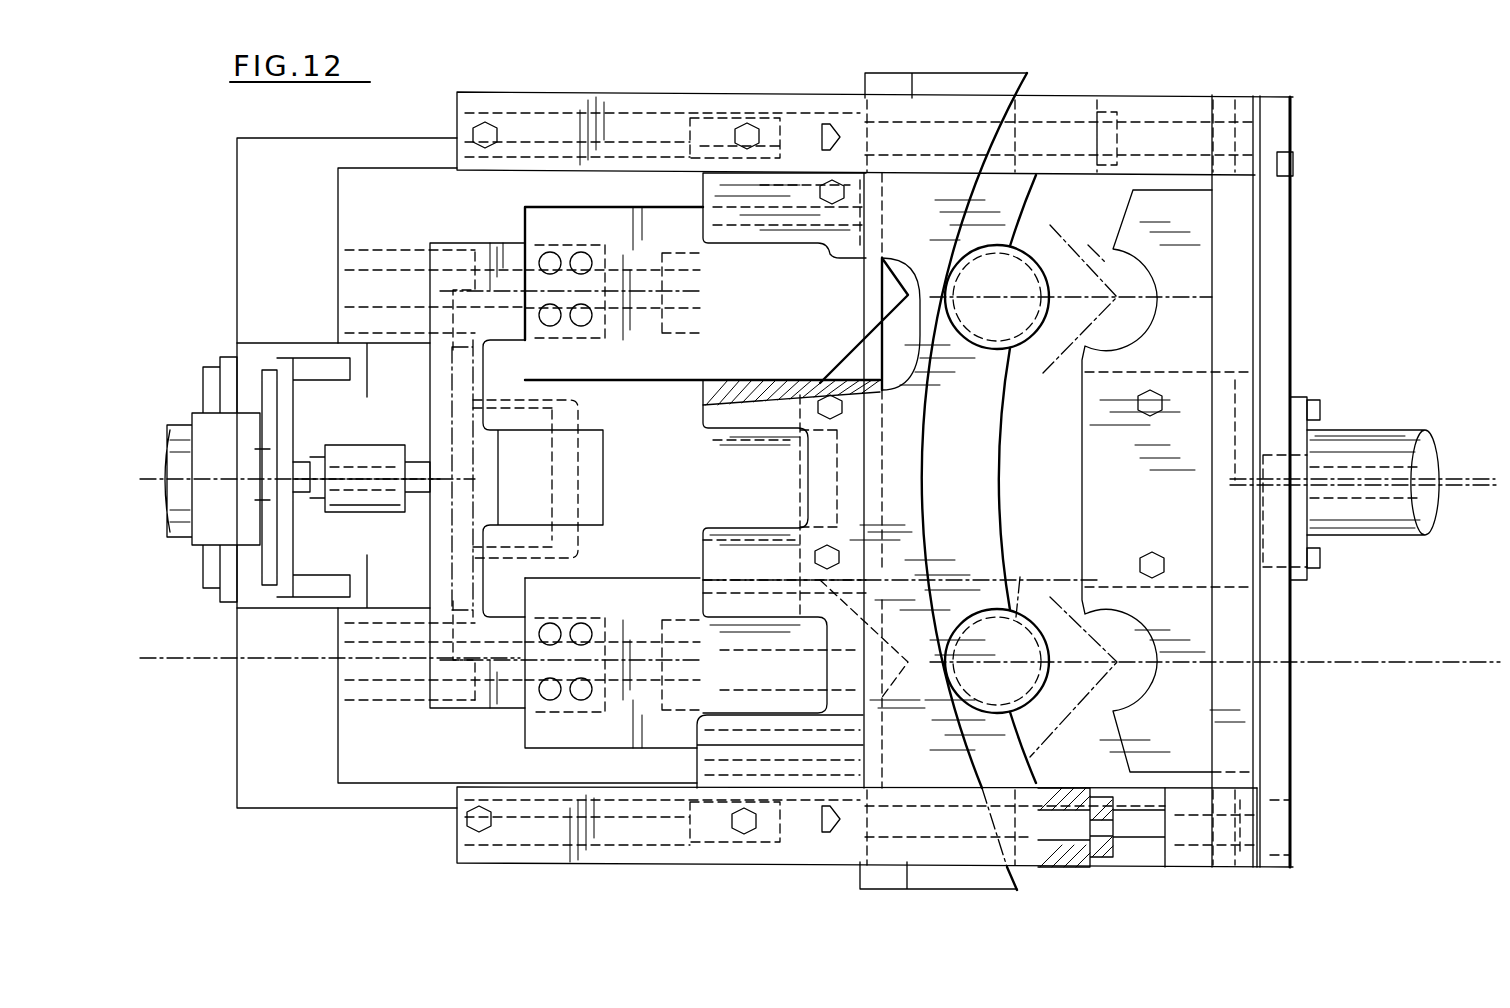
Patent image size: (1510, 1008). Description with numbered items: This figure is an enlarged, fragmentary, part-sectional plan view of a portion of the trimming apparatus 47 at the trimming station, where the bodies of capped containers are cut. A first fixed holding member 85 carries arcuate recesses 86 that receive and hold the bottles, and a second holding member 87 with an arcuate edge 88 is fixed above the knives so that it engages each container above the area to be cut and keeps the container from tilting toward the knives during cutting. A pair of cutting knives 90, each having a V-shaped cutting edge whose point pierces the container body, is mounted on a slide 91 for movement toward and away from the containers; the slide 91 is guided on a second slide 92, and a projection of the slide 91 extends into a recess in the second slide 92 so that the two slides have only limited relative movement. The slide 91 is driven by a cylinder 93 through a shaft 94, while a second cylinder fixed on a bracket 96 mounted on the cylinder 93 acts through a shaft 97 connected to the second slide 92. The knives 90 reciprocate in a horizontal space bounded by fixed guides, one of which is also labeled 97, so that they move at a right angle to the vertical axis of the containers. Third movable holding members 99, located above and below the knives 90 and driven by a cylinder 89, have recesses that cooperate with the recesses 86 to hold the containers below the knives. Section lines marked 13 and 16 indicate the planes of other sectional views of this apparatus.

The section line 13- 13 is at (152, 664).
The section line 16- 16 is at (152, 483).
The trimming apparatus 47 is at (1312, 170).
The first fixed holding member 85 is at (980, 402).
The arcuate recesses 86 is at (965, 343).
The second holding member 87 is at (903, 455).
The arcuate edge 88 is at (925, 529).
The cylinder 89 is at (1370, 448).
The cutting knives 90 is at (667, 370).
The slide 91 is at (483, 692).
The second slide 92 is at (407, 768).
The cylinder 93 is at (185, 537).
The shaft 94 is at (422, 467).
The bracket 96 is at (288, 585).
The shaft 97 is at (987, 228).
The third movable holding members 99 is at (1185, 345).